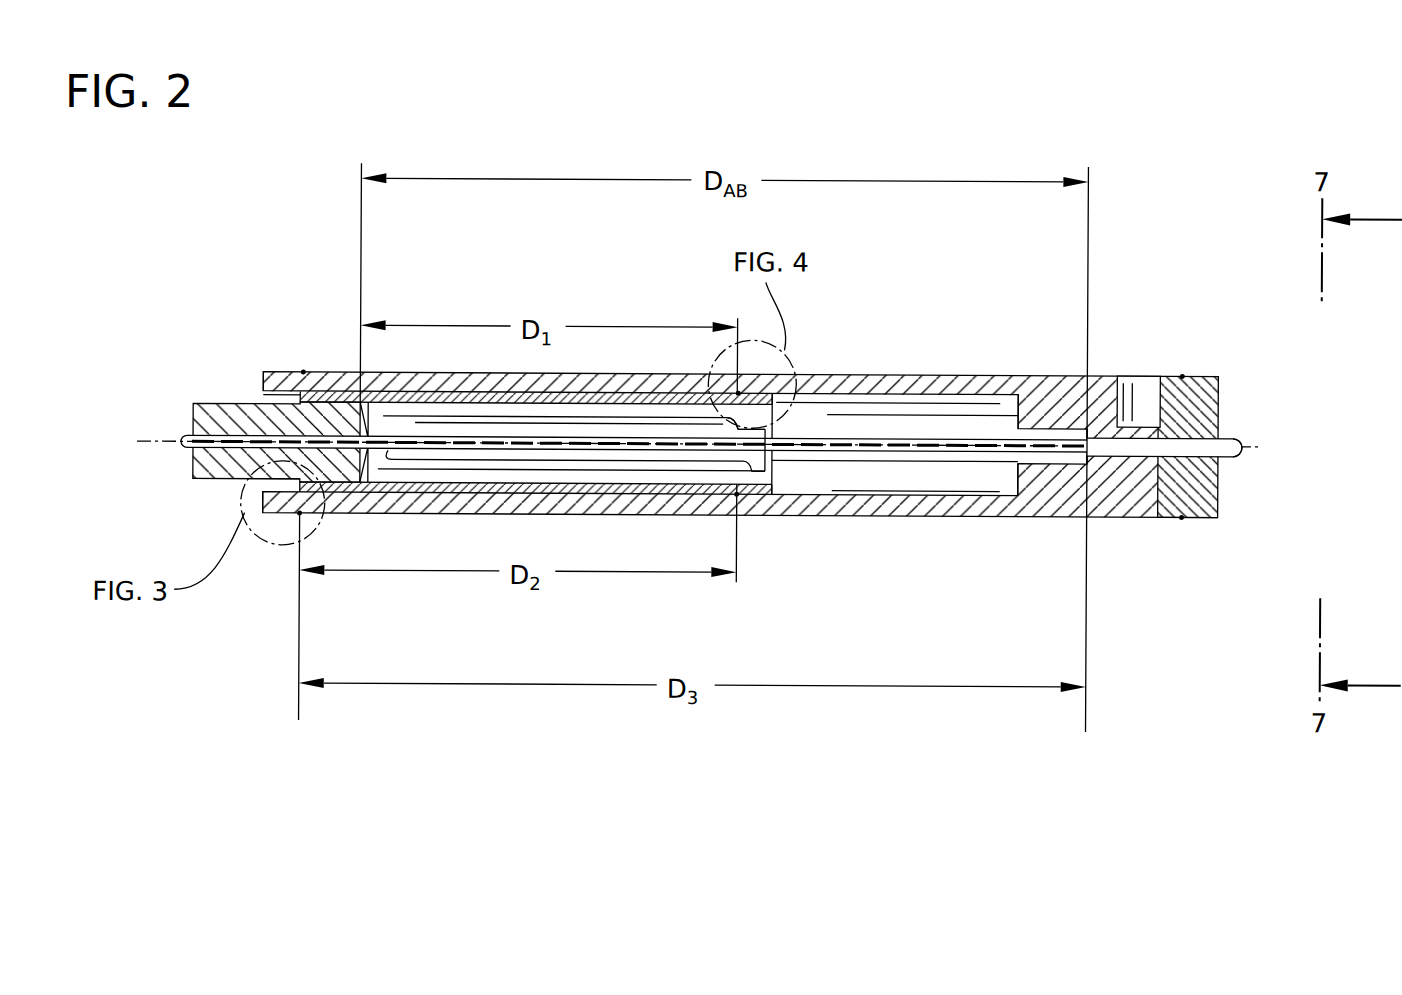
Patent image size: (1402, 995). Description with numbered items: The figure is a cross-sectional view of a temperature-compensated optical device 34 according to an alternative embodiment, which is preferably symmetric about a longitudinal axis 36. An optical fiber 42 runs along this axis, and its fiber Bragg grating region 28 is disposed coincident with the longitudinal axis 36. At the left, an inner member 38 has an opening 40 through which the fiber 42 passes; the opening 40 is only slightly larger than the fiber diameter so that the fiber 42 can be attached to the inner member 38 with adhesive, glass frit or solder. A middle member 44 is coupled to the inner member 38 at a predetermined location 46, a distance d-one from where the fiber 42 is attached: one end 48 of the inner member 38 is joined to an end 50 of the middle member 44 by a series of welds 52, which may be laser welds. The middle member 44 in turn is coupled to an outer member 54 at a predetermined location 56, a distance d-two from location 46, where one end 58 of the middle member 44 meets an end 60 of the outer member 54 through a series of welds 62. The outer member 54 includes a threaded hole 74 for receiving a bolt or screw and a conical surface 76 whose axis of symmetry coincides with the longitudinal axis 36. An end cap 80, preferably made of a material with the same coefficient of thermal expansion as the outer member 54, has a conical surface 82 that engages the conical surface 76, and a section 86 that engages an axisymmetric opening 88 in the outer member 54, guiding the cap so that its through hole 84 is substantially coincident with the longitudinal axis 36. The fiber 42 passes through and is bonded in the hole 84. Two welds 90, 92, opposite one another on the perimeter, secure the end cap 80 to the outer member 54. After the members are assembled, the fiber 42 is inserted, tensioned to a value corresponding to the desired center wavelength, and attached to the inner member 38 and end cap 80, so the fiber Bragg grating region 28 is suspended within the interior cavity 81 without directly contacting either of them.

The fiber Bragg grating region 28 is at (772, 468).
The temperature-compensated optical device 34 is at (901, 572).
The longitudinal axis 36 is at (1248, 438).
The inner member 38 is at (195, 406).
The opening 40 is at (192, 464).
The optical fiber 42 is at (178, 441).
The middle member 44 is at (258, 388).
The predetermined location 46 is at (754, 497).
The end of the inner member 48 is at (737, 496).
The end of the middle member 50 is at (776, 404).
The welds 52 is at (790, 396).
The outer member 54 is at (330, 518).
The predetermined location 56 is at (300, 517).
The end of the middle member 58 is at (275, 376).
The end of the outer member 60 is at (322, 376).
The welds 62 is at (303, 374).
The threaded hole 74 is at (1153, 373).
The conical surface 76 is at (1207, 385).
The end cap 80 is at (1220, 495).
The interior cavity 81 is at (918, 482).
The conical surface 82 is at (1172, 486).
The through hole 84 is at (1248, 452).
The section 86 is at (1103, 471).
The opening 88 is at (1035, 392).
The weld 90 is at (1182, 516).
The weld 92 is at (1182, 374).